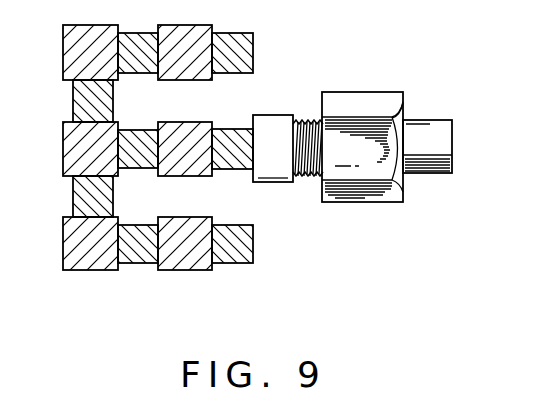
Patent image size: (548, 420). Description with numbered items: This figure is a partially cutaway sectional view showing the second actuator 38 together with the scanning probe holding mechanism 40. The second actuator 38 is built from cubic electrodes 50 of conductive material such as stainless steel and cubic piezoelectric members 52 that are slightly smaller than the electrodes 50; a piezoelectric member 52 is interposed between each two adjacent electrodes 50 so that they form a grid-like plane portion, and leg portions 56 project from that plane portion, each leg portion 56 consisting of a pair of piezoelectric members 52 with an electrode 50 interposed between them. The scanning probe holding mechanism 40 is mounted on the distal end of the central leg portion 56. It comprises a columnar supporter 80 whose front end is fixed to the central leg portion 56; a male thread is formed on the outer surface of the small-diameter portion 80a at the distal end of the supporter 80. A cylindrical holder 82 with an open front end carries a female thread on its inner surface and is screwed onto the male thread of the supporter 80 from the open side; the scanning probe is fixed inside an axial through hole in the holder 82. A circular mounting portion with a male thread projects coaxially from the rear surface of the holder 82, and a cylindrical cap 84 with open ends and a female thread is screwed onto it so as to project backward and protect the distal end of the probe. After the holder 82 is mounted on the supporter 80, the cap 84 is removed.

The second actuator 38 is at (133, 174).
The electrode 50 is at (71, 148).
The piezoelectric member 52 is at (133, 129).
The leg portion 56 is at (195, 182).
The columnar supporter 80 is at (292, 154).
The small-diameter portion 80a is at (302, 178).
The cylindrical holder 82 is at (366, 106).
The scanning probe holding mechanism 40 is at (414, 103).
The cap 84 is at (440, 146).